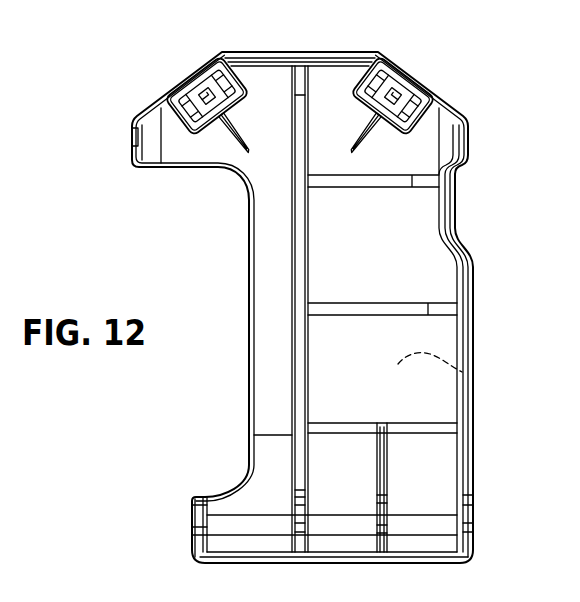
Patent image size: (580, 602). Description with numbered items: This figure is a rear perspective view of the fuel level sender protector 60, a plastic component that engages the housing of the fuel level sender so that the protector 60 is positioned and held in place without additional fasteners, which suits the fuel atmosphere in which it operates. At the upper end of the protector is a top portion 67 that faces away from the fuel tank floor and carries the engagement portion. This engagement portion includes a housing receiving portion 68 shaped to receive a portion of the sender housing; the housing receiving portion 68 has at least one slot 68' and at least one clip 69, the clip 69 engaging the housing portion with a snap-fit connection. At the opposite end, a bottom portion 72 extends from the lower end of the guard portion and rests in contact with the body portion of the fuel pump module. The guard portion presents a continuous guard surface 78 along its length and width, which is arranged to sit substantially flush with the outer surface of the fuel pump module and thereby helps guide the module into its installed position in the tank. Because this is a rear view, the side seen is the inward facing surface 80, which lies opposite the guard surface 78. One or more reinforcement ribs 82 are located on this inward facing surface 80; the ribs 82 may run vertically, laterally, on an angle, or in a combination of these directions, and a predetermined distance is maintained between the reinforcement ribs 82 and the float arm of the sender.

The fuel level sender protector 60 is at (463, 82).
The top portion 67 is at (300, 52).
The housing receiving portion 68 is at (194, 89).
The slot 68' is at (378, 92).
The clip 69 is at (209, 98).
The bottom portion 72 is at (430, 556).
The guard surface 78 is at (466, 373).
The inward facing surface 80 is at (389, 259).
The reinforcement rib 82 is at (300, 262).